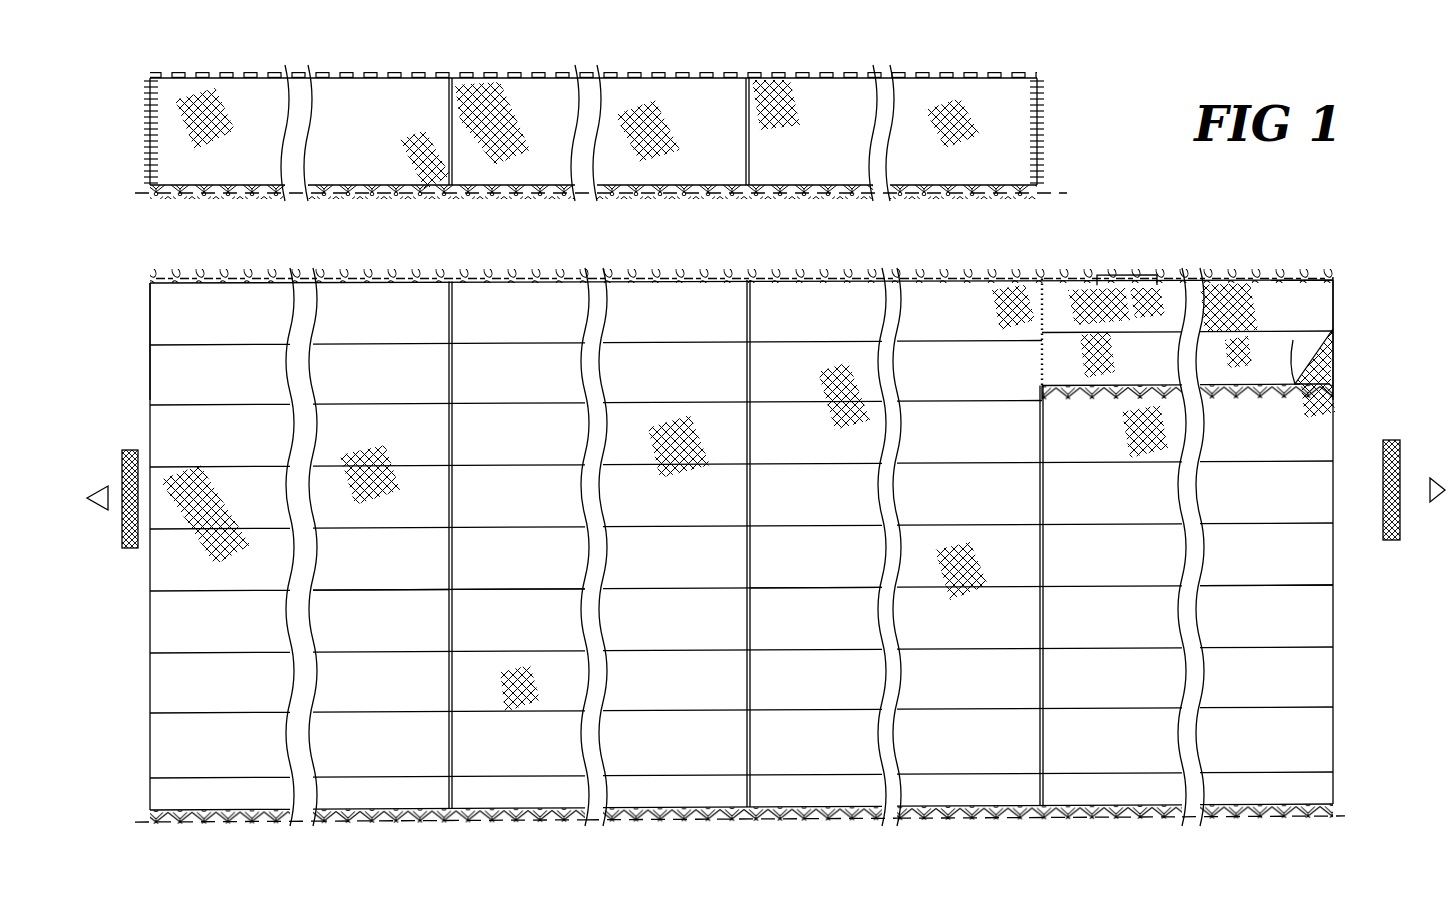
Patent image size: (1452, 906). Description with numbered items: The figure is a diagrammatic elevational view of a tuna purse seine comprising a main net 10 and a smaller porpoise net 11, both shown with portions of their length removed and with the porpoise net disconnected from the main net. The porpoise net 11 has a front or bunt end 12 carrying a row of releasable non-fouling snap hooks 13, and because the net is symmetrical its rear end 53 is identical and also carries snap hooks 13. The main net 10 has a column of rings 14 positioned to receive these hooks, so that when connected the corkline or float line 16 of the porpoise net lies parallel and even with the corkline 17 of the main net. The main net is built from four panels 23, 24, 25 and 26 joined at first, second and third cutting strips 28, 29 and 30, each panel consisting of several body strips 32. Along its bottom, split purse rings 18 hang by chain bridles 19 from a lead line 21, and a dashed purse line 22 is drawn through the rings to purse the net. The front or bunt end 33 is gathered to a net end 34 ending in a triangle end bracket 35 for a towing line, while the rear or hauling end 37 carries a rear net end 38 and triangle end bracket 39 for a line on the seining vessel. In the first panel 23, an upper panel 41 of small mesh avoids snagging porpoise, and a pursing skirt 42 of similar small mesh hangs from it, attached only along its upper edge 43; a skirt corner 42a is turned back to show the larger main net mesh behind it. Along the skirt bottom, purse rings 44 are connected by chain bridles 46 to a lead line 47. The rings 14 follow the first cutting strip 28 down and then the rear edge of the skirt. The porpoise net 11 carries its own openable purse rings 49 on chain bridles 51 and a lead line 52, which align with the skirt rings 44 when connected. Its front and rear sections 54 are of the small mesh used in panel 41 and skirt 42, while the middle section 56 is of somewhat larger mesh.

The main net 10 is at (1258, 256).
The porpoise net 11 is at (1064, 124).
The front or bunt end 12 is at (1048, 170).
The snap hooks 13 is at (1045, 106).
The rings 14 is at (1040, 378).
The corkline or float line 16 is at (715, 68).
The corkline 17 is at (778, 266).
The purse rings 18 is at (243, 823).
The chain bridles 19 is at (227, 815).
The lead line 21 is at (215, 812).
The purse line 22 is at (333, 822).
The first panel 23 is at (1248, 561).
The second panel 24 is at (795, 568).
The third panel 25 is at (513, 568).
The fourth panel 26 is at (355, 568).
The first cutting strip 28 is at (1044, 495).
The second cutting strip 29 is at (751, 435).
The third cutting strip 30 is at (453, 446).
The body strips 32 is at (195, 326).
The front or bunt end 33 is at (1333, 309).
The net end 34 is at (1402, 440).
The triangle end bracket 35 is at (1440, 480).
The rear or hauling end 37 is at (150, 306).
The rear net end 38 is at (122, 531).
The triangle end bracket 39 is at (93, 490).
The upper panel 41 is at (1268, 315).
The pursing skirt 42 is at (1127, 385).
The skirt corner 42a is at (1333, 338).
The upper edge 43 is at (1160, 333).
The purse rings 44 is at (1053, 398).
The chain bridles 46 is at (1275, 394).
The lead line 47 is at (1058, 391).
The purse rings 49 is at (430, 198).
The chain bridles 51 is at (470, 197).
The lead line 52 is at (336, 185).
The rear end 53 is at (150, 81).
The front and rear sections 54 is at (281, 82).
The middle section 56 is at (617, 84).